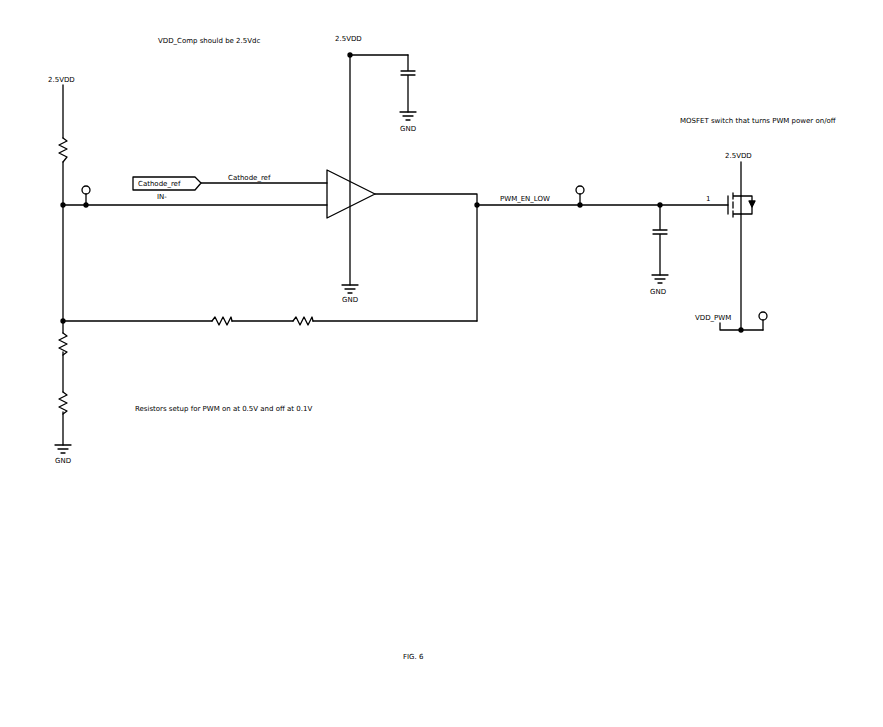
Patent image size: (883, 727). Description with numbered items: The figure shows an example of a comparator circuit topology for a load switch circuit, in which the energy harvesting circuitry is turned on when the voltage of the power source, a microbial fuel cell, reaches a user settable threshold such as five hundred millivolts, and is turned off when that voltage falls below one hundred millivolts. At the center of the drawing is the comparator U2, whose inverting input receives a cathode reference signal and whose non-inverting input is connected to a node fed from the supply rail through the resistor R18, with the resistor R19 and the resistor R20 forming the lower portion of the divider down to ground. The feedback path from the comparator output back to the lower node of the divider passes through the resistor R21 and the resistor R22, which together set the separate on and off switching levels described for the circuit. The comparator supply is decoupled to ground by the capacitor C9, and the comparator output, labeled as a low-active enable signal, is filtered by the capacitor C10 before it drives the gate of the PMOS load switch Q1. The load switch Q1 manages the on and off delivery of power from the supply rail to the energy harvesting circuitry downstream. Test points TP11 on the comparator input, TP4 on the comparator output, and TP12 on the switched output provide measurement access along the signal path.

The resistor 1.5Meg R18 is at (76, 149).
The resistor 68k R19 is at (70, 344).
The resistor 0 R20 is at (70, 402).
The resistor 180k R21 is at (222, 322).
The resistor 0 R22 is at (303, 322).
The capacitor 0.1u C9 is at (418, 83).
The capacitor 1u C10 is at (670, 240).
The comparator TLV3491AIDBVT U2 is at (365, 170).
The PMOS load switch Q1 is at (756, 246).
The test point TP4 is at (579, 184).
The test point TP11 is at (83, 184).
The test point TP12 is at (761, 310).